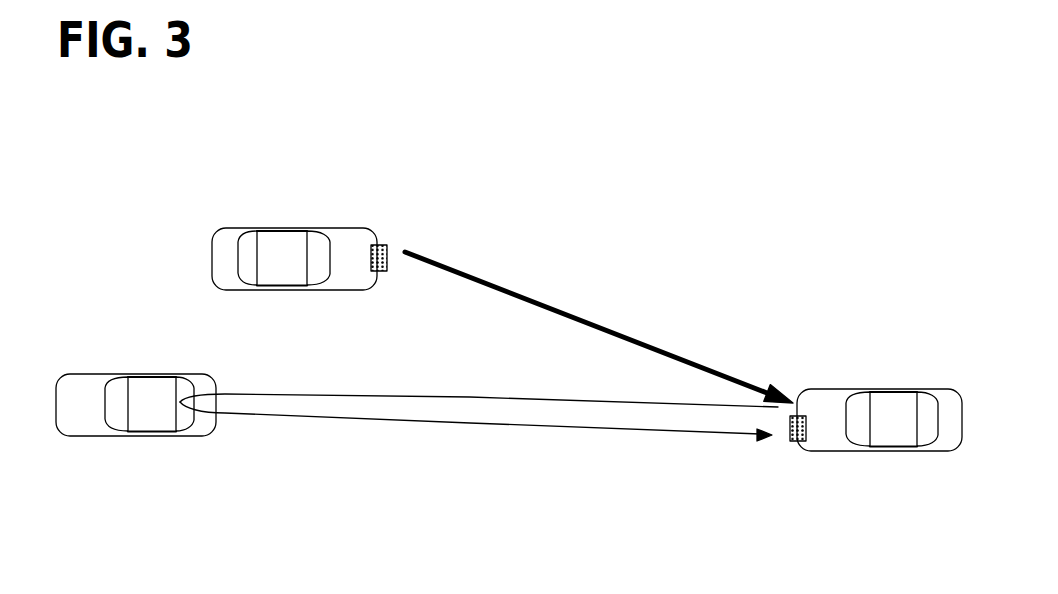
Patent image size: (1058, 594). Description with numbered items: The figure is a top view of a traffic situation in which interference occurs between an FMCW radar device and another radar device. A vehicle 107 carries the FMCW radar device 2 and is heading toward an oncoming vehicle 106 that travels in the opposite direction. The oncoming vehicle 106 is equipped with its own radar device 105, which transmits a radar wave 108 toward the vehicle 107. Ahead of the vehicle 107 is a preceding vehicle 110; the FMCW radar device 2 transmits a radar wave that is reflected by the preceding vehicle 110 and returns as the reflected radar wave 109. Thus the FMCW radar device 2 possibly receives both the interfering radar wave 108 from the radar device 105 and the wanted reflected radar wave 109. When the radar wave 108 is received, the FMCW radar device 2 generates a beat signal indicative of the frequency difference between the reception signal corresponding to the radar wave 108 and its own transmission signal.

The FMCW radar device 2 is at (789, 440).
The radar device 105 is at (388, 252).
The oncoming vehicle 106 is at (227, 229).
The vehicle 107 is at (833, 390).
The radar wave 108 is at (553, 308).
The reflected radar wave 109 is at (397, 424).
The preceding vehicle 110 is at (92, 373).